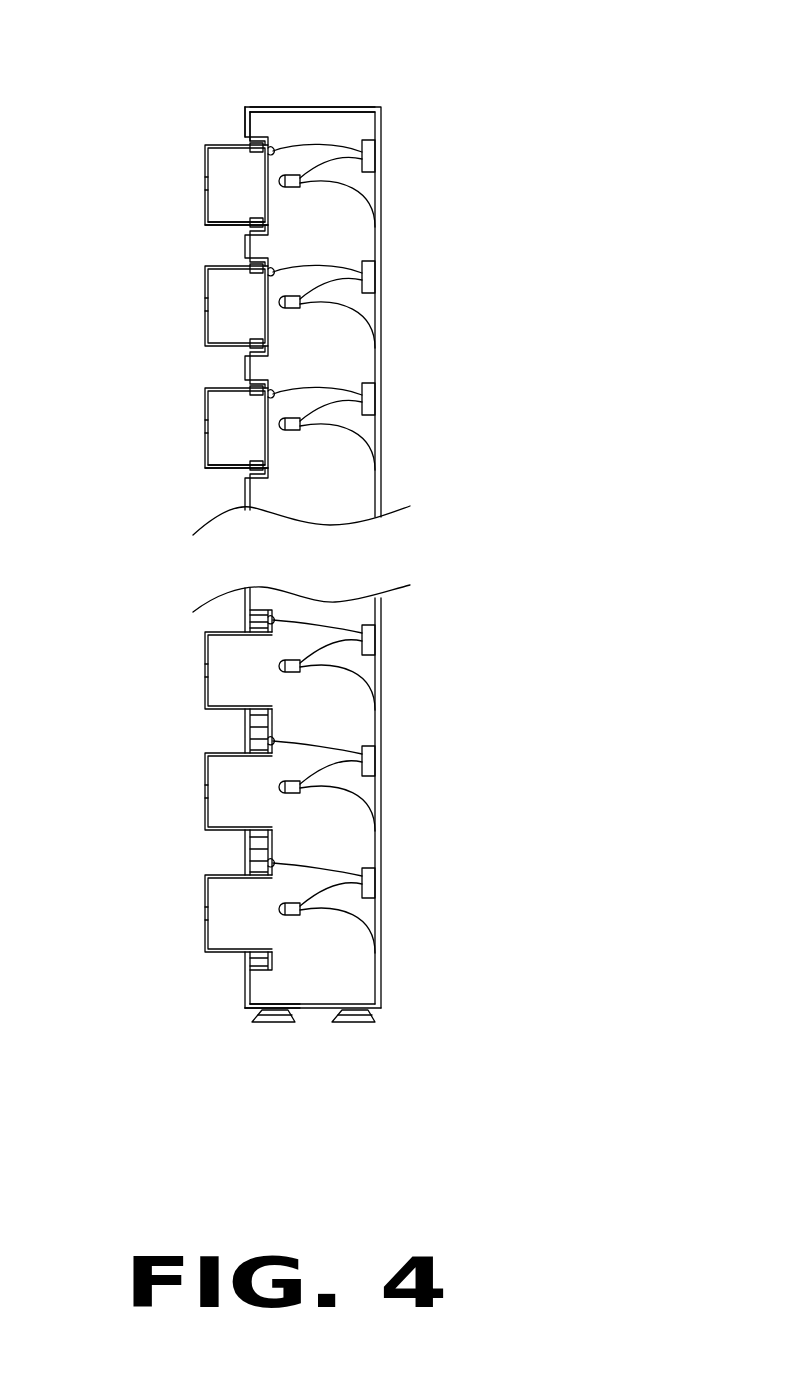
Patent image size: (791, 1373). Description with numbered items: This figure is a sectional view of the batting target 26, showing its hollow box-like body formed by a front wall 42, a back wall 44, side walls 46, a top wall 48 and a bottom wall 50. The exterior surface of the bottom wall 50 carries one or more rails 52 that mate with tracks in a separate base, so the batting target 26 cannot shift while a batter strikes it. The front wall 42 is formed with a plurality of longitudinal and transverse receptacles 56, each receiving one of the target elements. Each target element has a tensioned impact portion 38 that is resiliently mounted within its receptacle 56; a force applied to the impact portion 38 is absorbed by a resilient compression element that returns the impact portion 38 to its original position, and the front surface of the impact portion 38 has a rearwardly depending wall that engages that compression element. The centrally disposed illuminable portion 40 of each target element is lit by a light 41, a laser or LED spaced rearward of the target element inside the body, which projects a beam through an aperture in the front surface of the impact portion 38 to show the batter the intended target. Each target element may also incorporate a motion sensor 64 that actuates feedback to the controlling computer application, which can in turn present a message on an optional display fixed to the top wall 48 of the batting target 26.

The batting target 26 is at (390, 490).
The tensioned impact portion 38 is at (205, 405).
The illuminable portion 40 is at (205, 813).
The light 41 is at (300, 185).
The front wall 42 is at (243, 122).
The back wall 44 is at (382, 787).
The side wall 46 is at (350, 973).
The top wall 48 is at (318, 107).
The bottom wall 50 is at (245, 1010).
The rail 52 is at (273, 1022).
The receptacle 56 is at (268, 455).
The motion sensor 64 is at (372, 152).